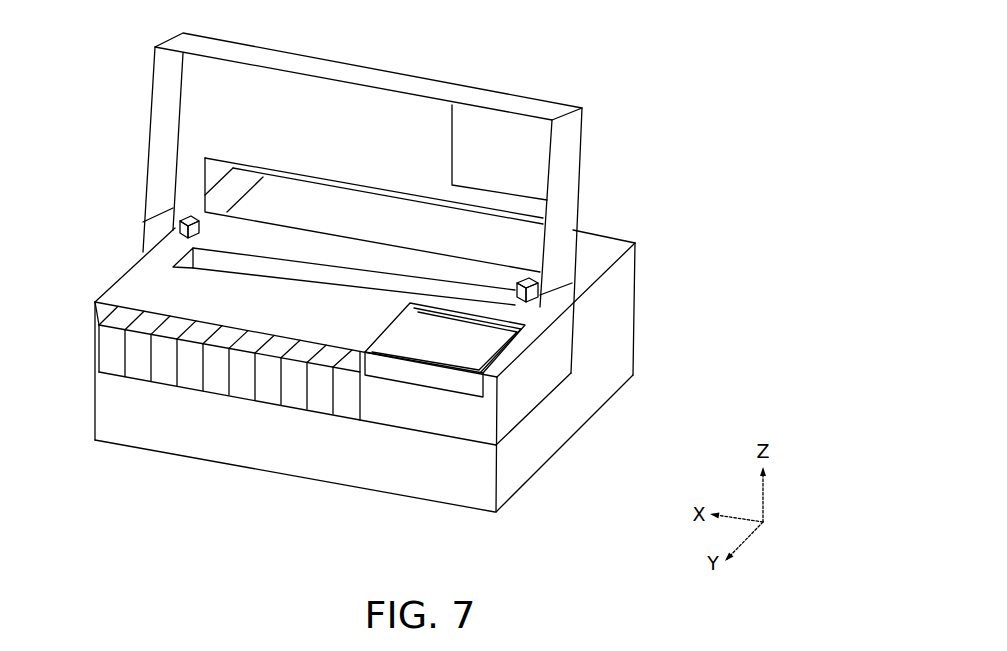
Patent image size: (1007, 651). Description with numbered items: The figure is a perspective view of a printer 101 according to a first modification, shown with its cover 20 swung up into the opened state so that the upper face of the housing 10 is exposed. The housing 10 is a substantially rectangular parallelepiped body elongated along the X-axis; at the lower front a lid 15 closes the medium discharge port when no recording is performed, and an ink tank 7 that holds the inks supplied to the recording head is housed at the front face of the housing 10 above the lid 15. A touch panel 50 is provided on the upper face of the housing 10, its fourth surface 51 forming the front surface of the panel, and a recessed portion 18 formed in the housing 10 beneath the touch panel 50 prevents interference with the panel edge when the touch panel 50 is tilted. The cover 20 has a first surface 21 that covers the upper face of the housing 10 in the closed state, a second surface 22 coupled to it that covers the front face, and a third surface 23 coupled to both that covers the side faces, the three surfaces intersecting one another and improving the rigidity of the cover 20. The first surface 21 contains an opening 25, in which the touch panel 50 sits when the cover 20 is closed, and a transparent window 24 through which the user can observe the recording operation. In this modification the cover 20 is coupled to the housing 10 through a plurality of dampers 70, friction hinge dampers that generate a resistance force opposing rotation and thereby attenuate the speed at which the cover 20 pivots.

The printer 101 is at (640, 62).
The cover 20 is at (399, 64).
The first surface 21 is at (207, 115).
The second surface 22 is at (533, 110).
The third surface 23 is at (573, 158).
The window 24 is at (335, 203).
The opening 25 is at (460, 147).
The housing 10 is at (551, 472).
The lid 15 is at (326, 470).
The ink tank 7 is at (213, 383).
The recessed portion 18 is at (396, 378).
The touch panel 50 is at (360, 322).
The fourth surface 51 is at (440, 297).
The damper 70 is at (160, 247).